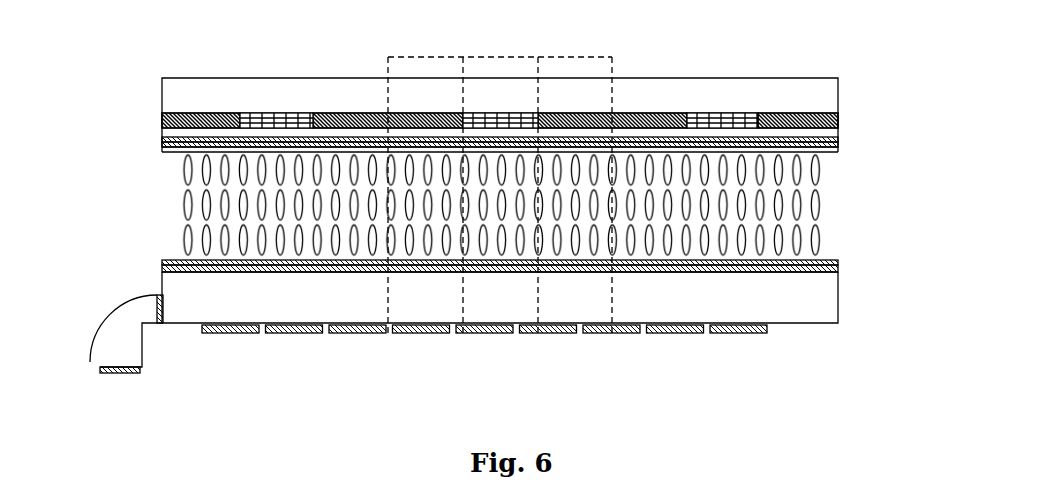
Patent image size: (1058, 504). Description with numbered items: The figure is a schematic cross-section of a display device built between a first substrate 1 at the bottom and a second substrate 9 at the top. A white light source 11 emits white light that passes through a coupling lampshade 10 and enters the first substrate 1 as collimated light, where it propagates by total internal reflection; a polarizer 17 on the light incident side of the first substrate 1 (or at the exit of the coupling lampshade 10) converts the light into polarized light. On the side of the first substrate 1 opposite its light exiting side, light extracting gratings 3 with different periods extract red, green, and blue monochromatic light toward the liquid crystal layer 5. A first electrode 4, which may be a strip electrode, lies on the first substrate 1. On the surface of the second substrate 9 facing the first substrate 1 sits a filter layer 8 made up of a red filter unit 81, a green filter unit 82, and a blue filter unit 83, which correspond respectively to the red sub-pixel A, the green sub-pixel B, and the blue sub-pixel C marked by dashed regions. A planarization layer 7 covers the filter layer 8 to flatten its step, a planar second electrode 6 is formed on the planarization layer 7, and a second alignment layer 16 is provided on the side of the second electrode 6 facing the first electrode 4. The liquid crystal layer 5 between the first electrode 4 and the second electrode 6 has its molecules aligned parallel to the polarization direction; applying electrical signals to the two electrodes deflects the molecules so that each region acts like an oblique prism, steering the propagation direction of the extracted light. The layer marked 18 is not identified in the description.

The red sub-pixel A is at (420, 57).
The green sub-pixel B is at (505, 57).
The blue sub-pixel C is at (572, 57).
The first substrate 1 is at (838, 312).
The light extracting grating 3 is at (752, 333).
The first electrode 4 is at (838, 262).
The liquid crystal layer 5 is at (818, 203).
The second electrode 6 is at (838, 130).
The planarization layer 7 is at (838, 122).
The filter layer 8 is at (838, 115).
The red filter unit 81 is at (780, 113).
The green filter unit 82 is at (708, 113).
The blue filter unit 83 is at (638, 113).
The second substrate 9 is at (838, 80).
The coupling lampshade 10 is at (107, 345).
The white light source 11 is at (116, 373).
The second alignment layer 16 is at (838, 150).
The polarizer 17 is at (163, 323).
The insulating layer 18 is at (818, 262).